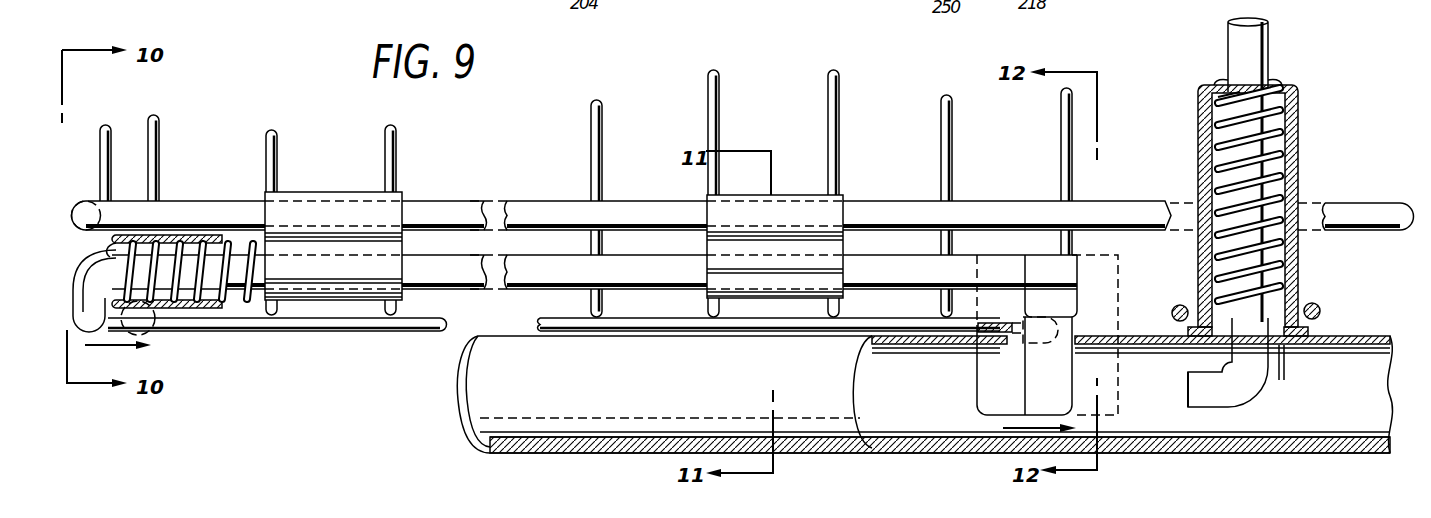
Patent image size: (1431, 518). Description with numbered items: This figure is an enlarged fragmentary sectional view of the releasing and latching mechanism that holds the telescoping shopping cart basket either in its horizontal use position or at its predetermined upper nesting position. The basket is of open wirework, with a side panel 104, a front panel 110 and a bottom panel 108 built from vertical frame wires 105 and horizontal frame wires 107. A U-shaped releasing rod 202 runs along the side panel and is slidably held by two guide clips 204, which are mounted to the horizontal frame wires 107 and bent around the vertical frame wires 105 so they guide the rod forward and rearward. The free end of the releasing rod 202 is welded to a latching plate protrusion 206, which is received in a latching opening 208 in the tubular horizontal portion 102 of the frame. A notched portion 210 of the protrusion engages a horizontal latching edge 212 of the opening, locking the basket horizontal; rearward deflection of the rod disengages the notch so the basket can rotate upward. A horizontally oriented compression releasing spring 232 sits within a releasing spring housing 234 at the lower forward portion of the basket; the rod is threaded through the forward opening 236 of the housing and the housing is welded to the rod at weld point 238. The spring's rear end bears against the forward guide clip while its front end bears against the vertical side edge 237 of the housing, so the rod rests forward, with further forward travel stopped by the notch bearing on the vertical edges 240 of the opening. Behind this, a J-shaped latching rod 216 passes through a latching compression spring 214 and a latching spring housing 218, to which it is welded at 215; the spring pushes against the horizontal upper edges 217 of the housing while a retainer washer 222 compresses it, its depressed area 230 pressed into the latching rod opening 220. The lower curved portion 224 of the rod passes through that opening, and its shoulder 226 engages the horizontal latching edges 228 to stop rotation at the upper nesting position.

The tubular horizontal portion 102 is at (464, 358).
The side panel 104 is at (707, 96).
The vertical frame wires 105 is at (267, 150).
The horizontal frame wires 107 is at (526, 210).
The bottom panel 108 is at (357, 340).
The front panel 110 is at (100, 148).
The releasing rod 202 is at (538, 275).
The guide clips 204 is at (390, 214).
The latching plate protrusion 206 is at (988, 404).
The latching openings 208 is at (1115, 330).
The notched portion 210 is at (1008, 306).
The horizontal latching edges 212 is at (990, 334).
The latching compression spring 214 is at (1273, 146).
The weld 215 is at (1269, 81).
The J-shaped latching rod 216 is at (1265, 30).
The horizontal upper edges 217 is at (1218, 98).
The latching spring housing 218 is at (1298, 172).
The latching rod openings 220 is at (1280, 351).
The retainer washer 222 is at (1318, 318).
The lower curved portion 224 is at (1238, 398).
The shoulder 226 is at (1190, 384).
The horizontal latching edges 228 is at (1198, 348).
The depressed area 230 is at (1298, 344).
The compression releasing spring 232 is at (190, 300).
The releasing spring housing 234 is at (185, 308).
The forward opening 236 is at (106, 262).
The vertical side edge 237 is at (157, 236).
The weld point 238 is at (108, 251).
The vertical edges 240 is at (1010, 343).